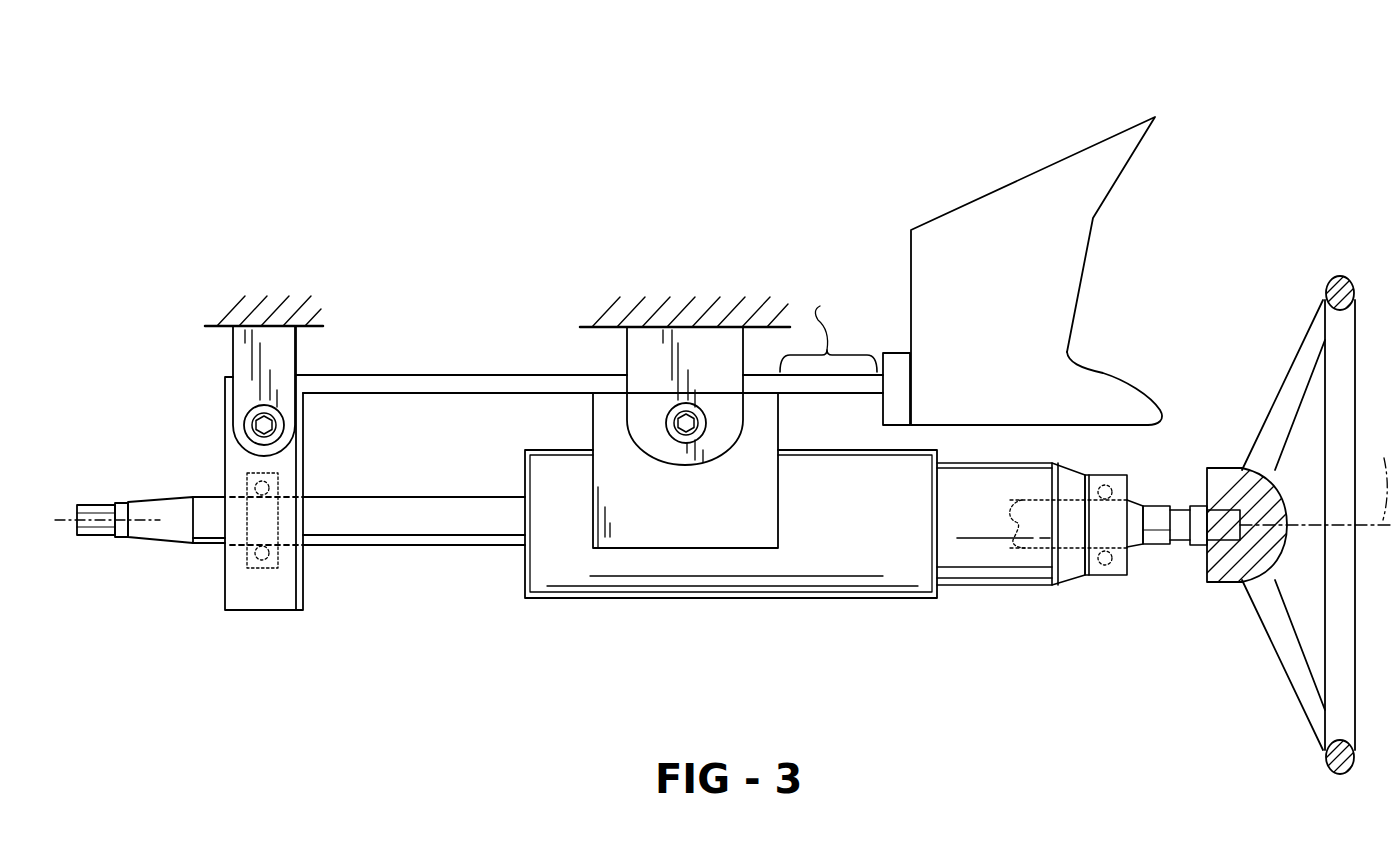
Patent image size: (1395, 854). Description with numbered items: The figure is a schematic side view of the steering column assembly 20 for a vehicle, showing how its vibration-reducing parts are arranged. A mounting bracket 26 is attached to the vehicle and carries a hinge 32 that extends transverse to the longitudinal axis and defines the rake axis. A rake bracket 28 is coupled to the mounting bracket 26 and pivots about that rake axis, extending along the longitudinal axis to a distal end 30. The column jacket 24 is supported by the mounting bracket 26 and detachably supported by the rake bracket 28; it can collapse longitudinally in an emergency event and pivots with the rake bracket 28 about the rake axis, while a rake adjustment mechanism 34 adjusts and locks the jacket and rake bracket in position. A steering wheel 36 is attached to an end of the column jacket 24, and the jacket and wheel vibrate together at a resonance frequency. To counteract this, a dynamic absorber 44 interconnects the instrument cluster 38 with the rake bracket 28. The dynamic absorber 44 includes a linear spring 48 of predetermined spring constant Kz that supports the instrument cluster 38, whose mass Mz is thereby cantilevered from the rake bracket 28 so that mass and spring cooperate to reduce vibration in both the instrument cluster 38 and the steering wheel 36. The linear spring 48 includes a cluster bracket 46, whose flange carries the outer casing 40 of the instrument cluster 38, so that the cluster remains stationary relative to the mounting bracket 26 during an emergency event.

The steering column assembly 20 is at (1153, 78).
The column jacket 24 is at (867, 597).
The mounting bracket 26 is at (297, 358).
The rake bracket 28 is at (438, 375).
The distal end 30 is at (780, 393).
The hinge 32 is at (244, 428).
The rake adjustment mechanism 34 is at (665, 416).
The steering wheel 36 is at (1352, 280).
The instrument cluster 38 is at (1098, 140).
The outer casing 40 is at (1052, 228).
The dynamic absorber 44 is at (848, 395).
The cluster bracket 46 is at (897, 353).
The linear spring 48 is at (813, 387).